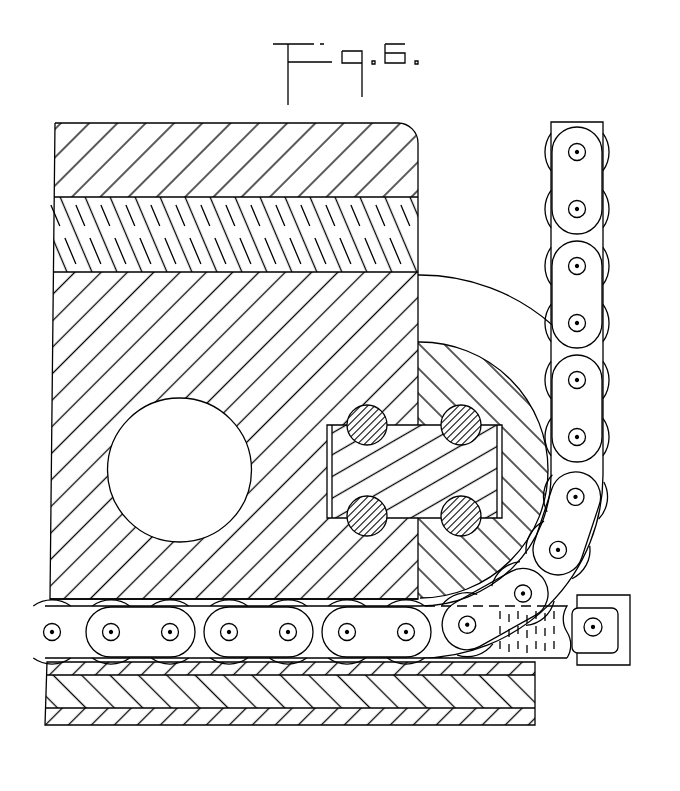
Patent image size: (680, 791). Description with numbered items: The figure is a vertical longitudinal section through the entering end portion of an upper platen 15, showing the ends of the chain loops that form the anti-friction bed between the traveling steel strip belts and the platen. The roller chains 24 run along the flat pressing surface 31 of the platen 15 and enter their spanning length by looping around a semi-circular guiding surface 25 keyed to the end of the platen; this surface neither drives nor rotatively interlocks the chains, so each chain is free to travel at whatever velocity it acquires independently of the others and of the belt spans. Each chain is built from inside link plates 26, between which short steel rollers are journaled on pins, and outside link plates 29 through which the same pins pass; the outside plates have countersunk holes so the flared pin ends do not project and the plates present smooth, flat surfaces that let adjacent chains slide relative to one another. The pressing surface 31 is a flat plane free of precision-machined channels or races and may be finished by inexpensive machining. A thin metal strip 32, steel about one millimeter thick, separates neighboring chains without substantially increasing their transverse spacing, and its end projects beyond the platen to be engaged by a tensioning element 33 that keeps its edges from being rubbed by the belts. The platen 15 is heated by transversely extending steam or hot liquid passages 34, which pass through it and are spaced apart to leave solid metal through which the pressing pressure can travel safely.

The platen 15 is at (423, 285).
The roller chains 24 is at (348, 393).
The semi-circular guiding surfaces 25 is at (500, 372).
The inside link plates 26 is at (604, 348).
The outside link plates 29 is at (588, 178).
The pressing surfaces 31 is at (212, 597).
The thin metal strips 32 is at (548, 642).
The tensioning element 33 is at (632, 594).
The steam or hot liquid passages 34 is at (147, 410).